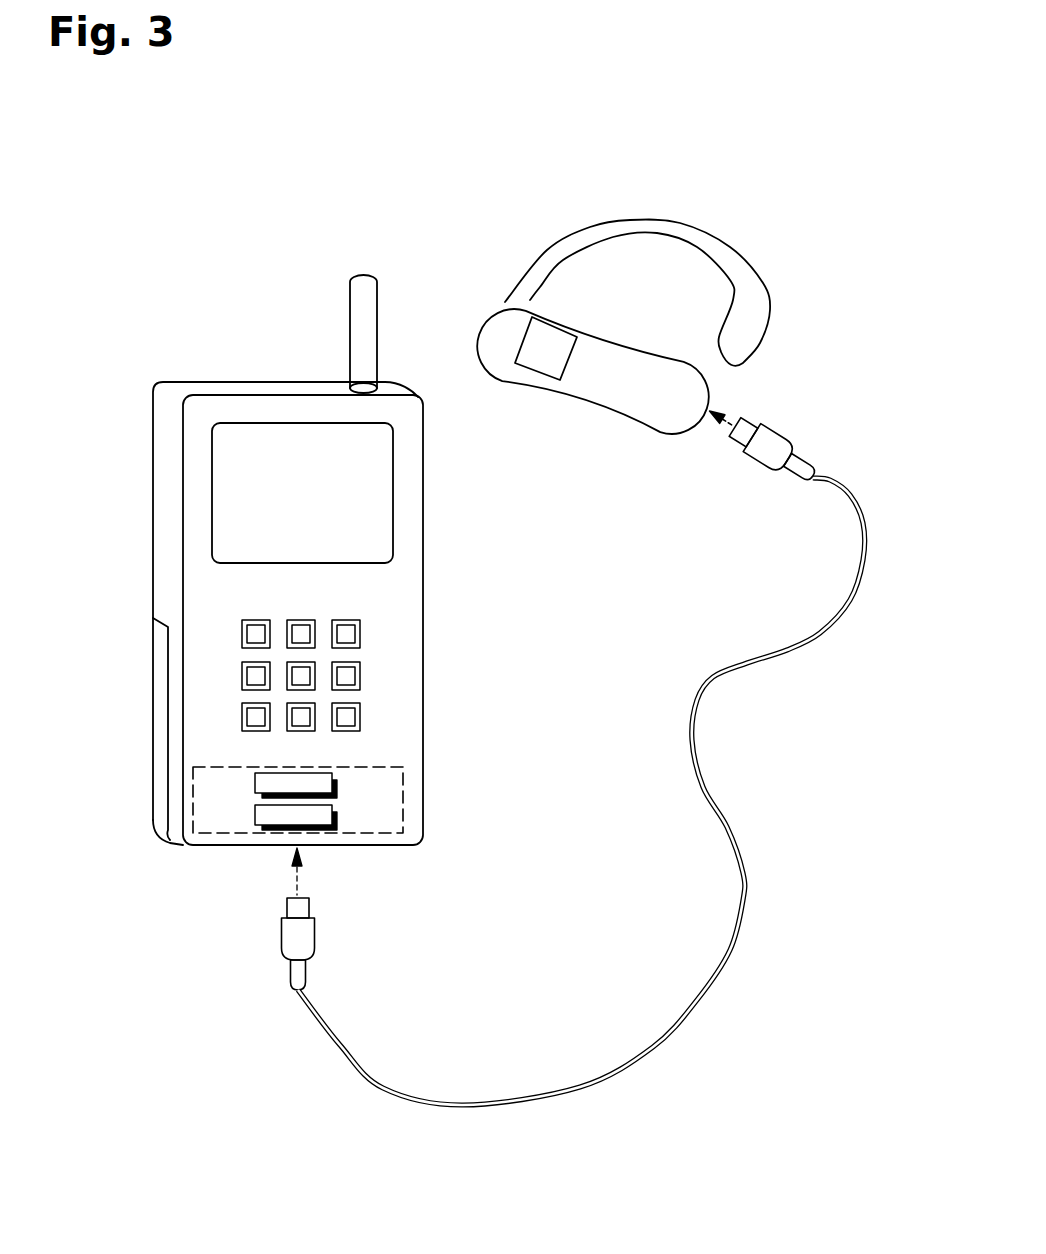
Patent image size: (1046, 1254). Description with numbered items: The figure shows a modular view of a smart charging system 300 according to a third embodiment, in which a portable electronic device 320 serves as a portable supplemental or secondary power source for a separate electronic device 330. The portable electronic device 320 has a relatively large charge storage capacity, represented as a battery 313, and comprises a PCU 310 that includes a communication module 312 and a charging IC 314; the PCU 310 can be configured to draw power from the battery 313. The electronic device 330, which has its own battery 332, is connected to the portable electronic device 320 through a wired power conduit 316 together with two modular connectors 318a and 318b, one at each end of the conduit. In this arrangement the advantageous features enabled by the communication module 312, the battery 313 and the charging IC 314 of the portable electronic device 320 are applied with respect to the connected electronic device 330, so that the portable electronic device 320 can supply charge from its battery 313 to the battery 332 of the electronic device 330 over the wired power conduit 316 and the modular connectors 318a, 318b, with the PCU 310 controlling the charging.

The smart charging system 300 is at (794, 138).
The PCU 310 is at (385, 766).
The communication module 312 is at (255, 779).
The battery 313 is at (153, 725).
The charging IC 314 is at (337, 818).
The wired power conduit 316 is at (697, 690).
The modular connector 318a is at (288, 905).
The modular connector 318b is at (742, 453).
The portable electronic device 320 is at (153, 422).
The electronic device 330 is at (522, 388).
The battery 332 is at (555, 348).